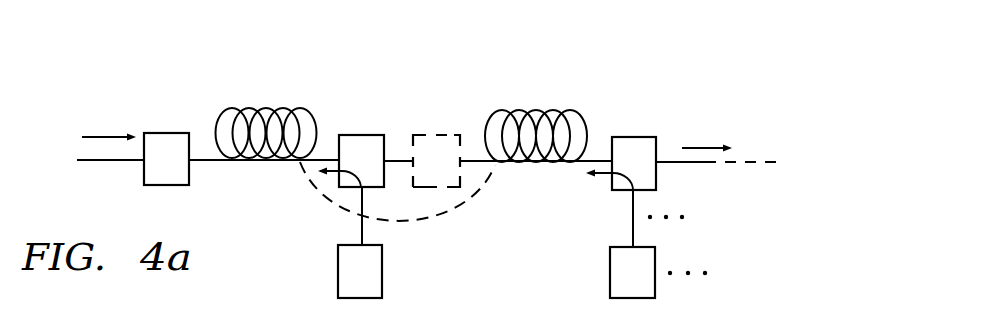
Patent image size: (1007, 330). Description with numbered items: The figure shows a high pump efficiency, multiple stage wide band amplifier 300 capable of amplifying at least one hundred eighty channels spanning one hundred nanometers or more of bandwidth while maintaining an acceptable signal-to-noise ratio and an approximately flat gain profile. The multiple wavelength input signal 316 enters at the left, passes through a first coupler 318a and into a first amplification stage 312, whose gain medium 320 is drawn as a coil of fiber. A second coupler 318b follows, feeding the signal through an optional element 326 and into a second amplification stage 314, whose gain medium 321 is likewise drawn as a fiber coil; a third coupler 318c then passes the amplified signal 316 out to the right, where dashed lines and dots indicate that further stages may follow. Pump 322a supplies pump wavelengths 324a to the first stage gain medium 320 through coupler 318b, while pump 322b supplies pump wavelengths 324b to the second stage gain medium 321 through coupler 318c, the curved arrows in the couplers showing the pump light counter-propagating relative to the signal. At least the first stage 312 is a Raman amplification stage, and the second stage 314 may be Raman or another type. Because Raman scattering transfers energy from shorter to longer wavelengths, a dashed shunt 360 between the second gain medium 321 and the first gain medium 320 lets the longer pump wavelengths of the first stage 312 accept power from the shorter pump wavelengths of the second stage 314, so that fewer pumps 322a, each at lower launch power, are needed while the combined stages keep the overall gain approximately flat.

The multiple stage wide band amplifier 300 is at (391, 71).
The multiple wavelength input signal 316 is at (708, 127).
The first coupler 318a is at (170, 133).
The second coupler 318b is at (357, 134).
The third coupler 318c is at (632, 136).
The first amplification stage 312 is at (255, 173).
The second amplification stage 314 is at (528, 175).
The gain medium 320 is at (248, 107).
The gain medium 321 is at (552, 110).
The optional component 326 is at (437, 134).
The wavelength pump 322a is at (338, 272).
The second pump source 322b is at (611, 272).
The pump wavelengths 324a is at (360, 224).
The pump wavelengths 324b is at (632, 225).
The shunt 360 is at (421, 217).